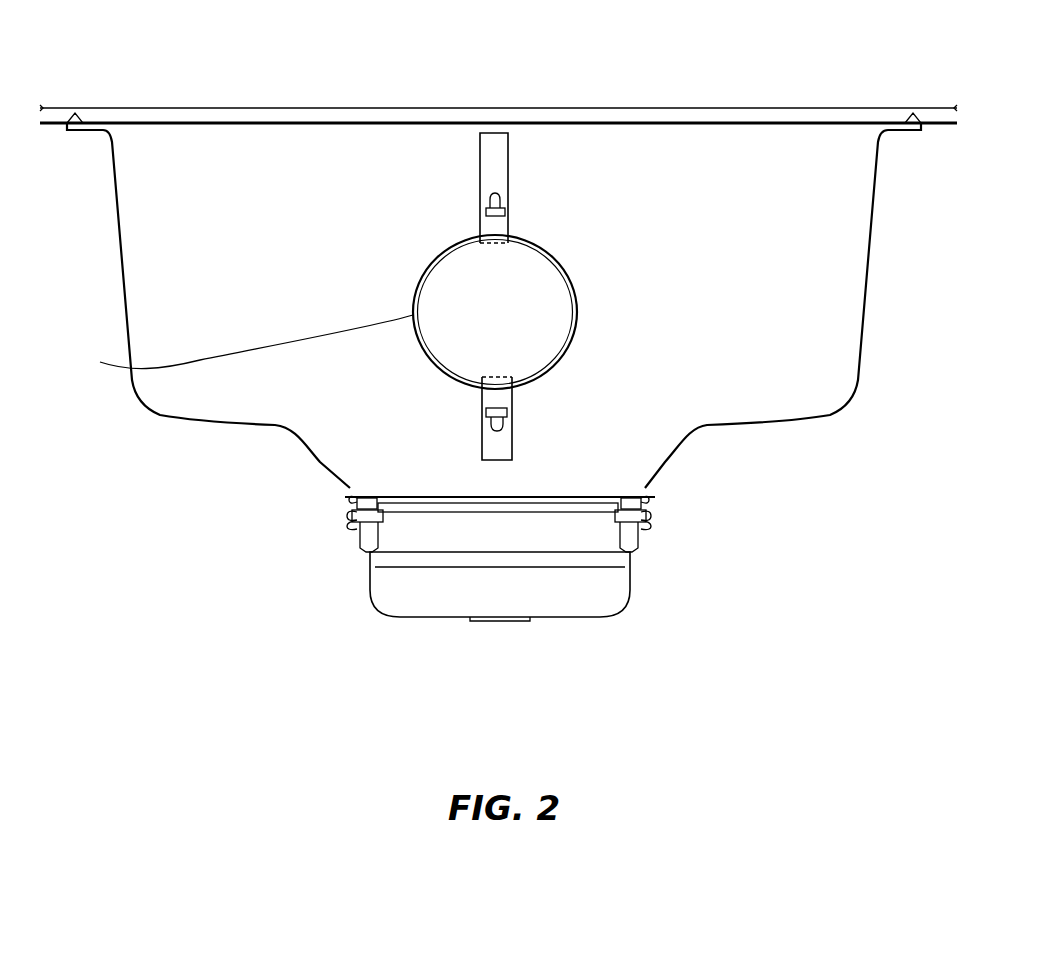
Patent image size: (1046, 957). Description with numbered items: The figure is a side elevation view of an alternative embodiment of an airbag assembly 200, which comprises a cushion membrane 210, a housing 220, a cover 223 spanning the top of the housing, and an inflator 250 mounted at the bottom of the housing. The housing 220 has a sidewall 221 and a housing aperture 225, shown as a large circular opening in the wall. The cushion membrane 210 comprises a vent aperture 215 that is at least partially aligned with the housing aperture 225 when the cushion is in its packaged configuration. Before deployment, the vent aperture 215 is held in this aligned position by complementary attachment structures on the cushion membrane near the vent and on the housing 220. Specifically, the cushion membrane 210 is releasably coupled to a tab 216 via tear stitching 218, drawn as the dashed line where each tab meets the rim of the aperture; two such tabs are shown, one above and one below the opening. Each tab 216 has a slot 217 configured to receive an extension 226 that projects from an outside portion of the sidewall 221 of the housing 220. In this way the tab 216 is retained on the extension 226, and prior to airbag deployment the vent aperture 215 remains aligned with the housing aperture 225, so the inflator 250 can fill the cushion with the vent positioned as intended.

The airbag assembly 200 is at (278, 85).
The cover 223 is at (778, 110).
The sidewall 221 is at (810, 194).
The housing 220 is at (752, 407).
The vent aperture 215 is at (455, 265).
The cushion membrane 210 is at (575, 293).
The housing aperture 225 is at (239, 343).
The tab 216 is at (502, 177).
The tear stitching 218 is at (537, 247).
The extension 226 is at (487, 198).
The slot 217 is at (500, 221).
The inflator 250 is at (440, 583).